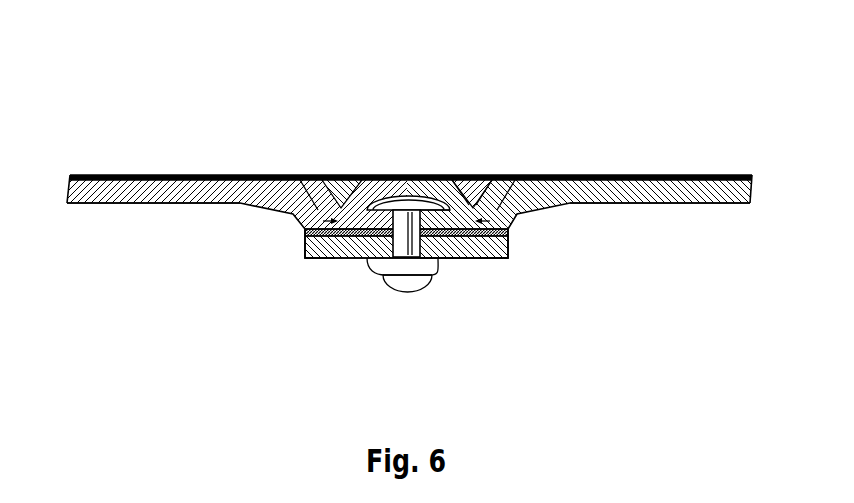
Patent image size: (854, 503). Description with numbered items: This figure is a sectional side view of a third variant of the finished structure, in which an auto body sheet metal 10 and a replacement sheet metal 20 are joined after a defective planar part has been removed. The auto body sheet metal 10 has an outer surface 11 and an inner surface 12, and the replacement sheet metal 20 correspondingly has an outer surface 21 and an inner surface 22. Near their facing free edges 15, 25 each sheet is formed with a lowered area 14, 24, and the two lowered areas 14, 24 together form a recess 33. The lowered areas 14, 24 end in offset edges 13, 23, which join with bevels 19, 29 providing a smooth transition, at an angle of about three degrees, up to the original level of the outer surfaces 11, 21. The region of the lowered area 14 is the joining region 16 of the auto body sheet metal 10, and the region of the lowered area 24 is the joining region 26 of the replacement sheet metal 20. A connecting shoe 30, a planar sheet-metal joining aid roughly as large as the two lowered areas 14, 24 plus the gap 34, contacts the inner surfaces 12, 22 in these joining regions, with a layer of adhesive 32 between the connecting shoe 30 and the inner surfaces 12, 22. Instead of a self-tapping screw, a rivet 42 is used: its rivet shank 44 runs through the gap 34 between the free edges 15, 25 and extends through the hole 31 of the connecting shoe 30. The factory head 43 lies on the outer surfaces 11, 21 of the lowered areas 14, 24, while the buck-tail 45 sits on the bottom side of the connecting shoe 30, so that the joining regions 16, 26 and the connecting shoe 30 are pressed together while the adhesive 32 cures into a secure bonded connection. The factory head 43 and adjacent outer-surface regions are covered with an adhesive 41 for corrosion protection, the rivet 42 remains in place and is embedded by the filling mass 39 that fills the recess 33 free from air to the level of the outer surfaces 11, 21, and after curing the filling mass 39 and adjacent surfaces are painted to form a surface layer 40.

The auto body sheet metal 10 is at (99, 212).
The outer surface 11 is at (135, 175).
The inner surface 12 is at (148, 205).
The offset edge 13 is at (312, 176).
The lowered area 14 is at (353, 181).
The free edge 15 is at (402, 186).
The joining region 16 is at (303, 257).
The bevel 19 is at (262, 175).
The replacement sheet metal 20 is at (706, 212).
The outer surface 21 is at (660, 175).
The inner surface 22 is at (638, 205).
The offset edge 23 is at (501, 185).
The lowered area 24 is at (467, 185).
The free edge 25 is at (452, 258).
The joining region 26 is at (510, 242).
The bevel 29 is at (550, 175).
The connecting shoe 30 is at (487, 259).
The hole 31 is at (431, 259).
The adhesive 32 is at (507, 260).
The recess 33 is at (332, 190).
The gap 34 is at (368, 259).
The filling mass 39 is at (493, 198).
The surface layer 40 is at (437, 192).
The adhesive 41 is at (448, 196).
The rivet 42 is at (402, 285).
The factory head 43 is at (409, 200).
The rivet shank 44 is at (391, 284).
The buck-tail 45 is at (410, 276).